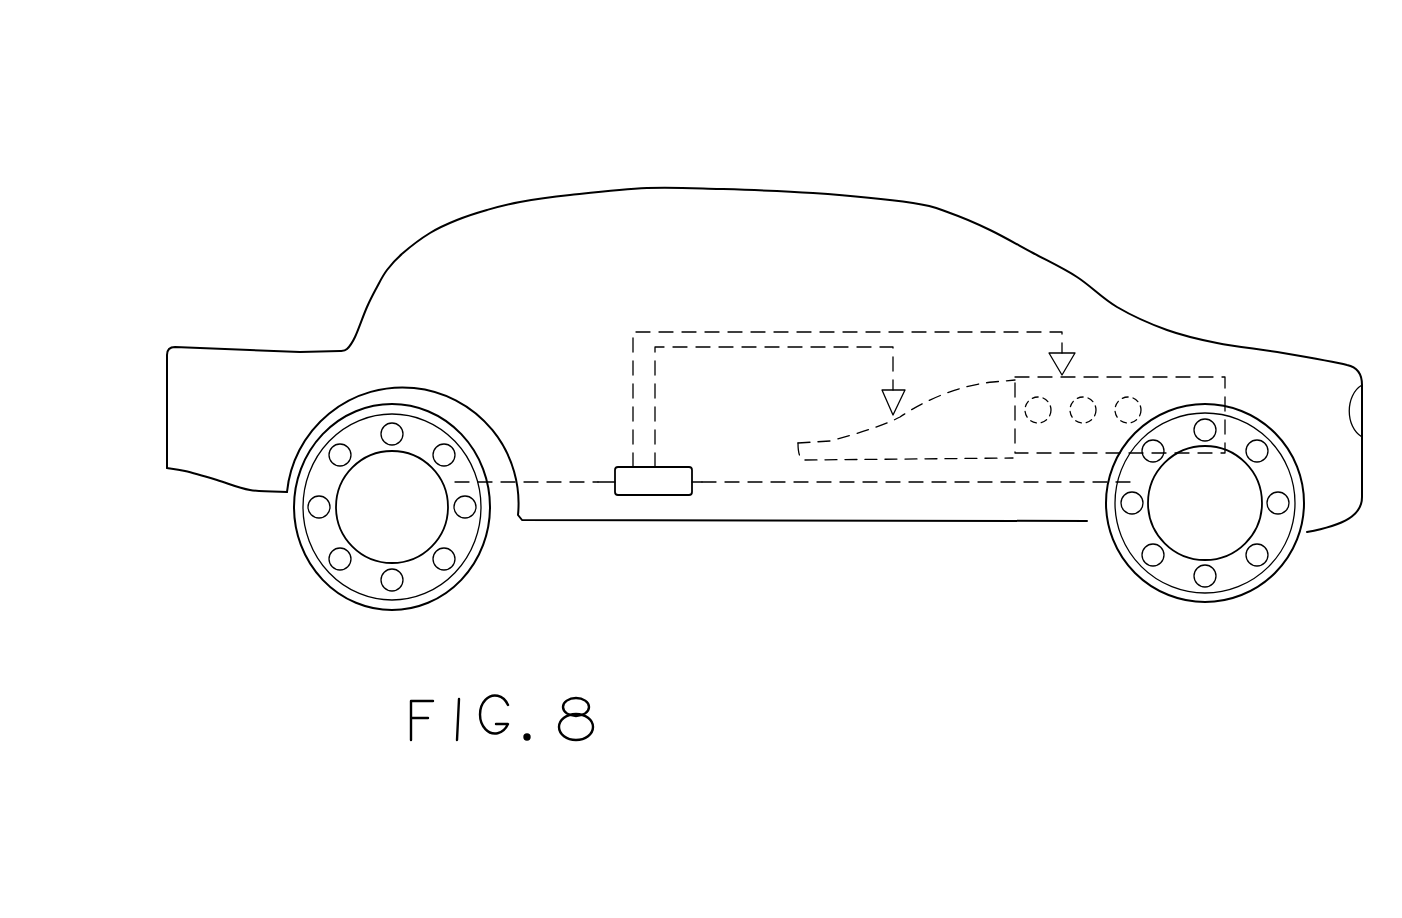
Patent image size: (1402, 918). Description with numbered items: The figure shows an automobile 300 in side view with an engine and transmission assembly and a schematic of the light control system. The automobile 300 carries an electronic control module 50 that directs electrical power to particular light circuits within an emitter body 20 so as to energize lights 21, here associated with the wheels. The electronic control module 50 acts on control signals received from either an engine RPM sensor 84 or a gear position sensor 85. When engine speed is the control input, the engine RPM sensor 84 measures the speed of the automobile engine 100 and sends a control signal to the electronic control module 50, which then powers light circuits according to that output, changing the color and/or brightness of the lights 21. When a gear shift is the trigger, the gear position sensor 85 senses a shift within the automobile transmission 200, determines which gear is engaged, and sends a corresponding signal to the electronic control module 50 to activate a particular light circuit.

The automobile 300 is at (508, 328).
The emitter body 20 is at (738, 518).
The lights 21 is at (450, 563).
The electronic control module 50 is at (663, 487).
The gear position sensor 85 is at (877, 405).
The engine RPM sensor 84 is at (1077, 358).
The automobile transmission 200 is at (975, 400).
The automobile engine 100 is at (1197, 391).